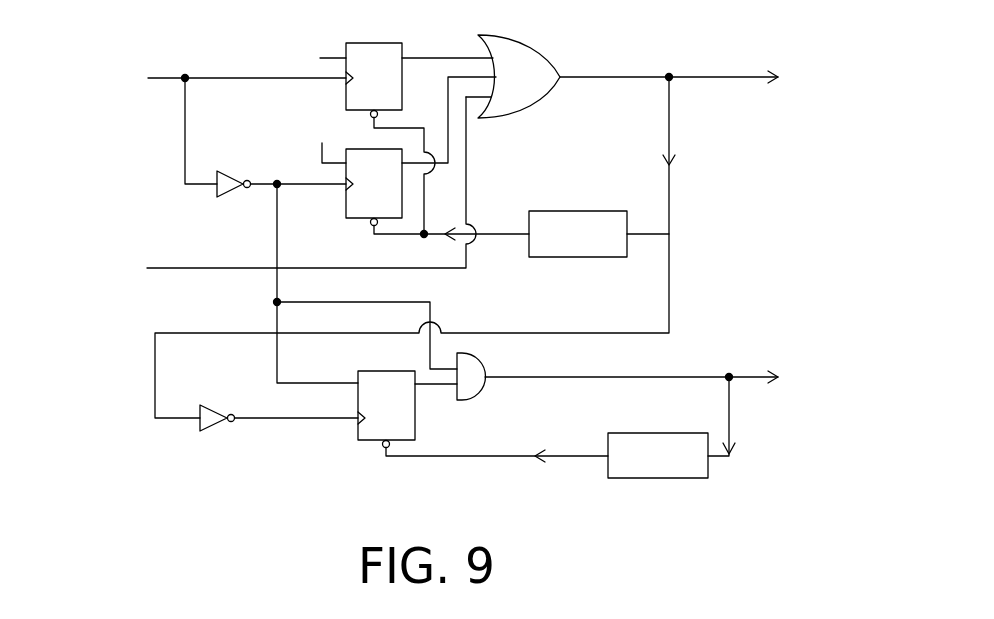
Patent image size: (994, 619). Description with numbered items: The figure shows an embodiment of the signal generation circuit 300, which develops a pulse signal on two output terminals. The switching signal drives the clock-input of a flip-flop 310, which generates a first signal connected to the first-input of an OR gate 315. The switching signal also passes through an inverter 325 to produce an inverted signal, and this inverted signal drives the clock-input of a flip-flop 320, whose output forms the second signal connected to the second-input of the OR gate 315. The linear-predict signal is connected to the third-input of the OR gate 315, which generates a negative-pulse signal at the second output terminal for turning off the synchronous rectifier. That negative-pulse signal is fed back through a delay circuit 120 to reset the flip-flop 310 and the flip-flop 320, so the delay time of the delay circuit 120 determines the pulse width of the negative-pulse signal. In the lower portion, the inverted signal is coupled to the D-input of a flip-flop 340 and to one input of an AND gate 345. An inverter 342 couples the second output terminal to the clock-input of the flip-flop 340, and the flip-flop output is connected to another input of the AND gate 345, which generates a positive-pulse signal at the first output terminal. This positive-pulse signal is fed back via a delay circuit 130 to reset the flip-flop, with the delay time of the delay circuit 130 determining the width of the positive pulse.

The signal generation circuit 300 is at (801, 31).
The flip-flop 310 is at (373, 52).
The flip-flop 320 is at (370, 155).
The inverter 325 is at (237, 172).
The OR gate 315 is at (538, 93).
The delay circuit 120 is at (583, 210).
The delay circuit 130 is at (685, 478).
The flip-flop 340 is at (404, 409).
The inverter 342 is at (208, 424).
The AND gate 345 is at (478, 383).